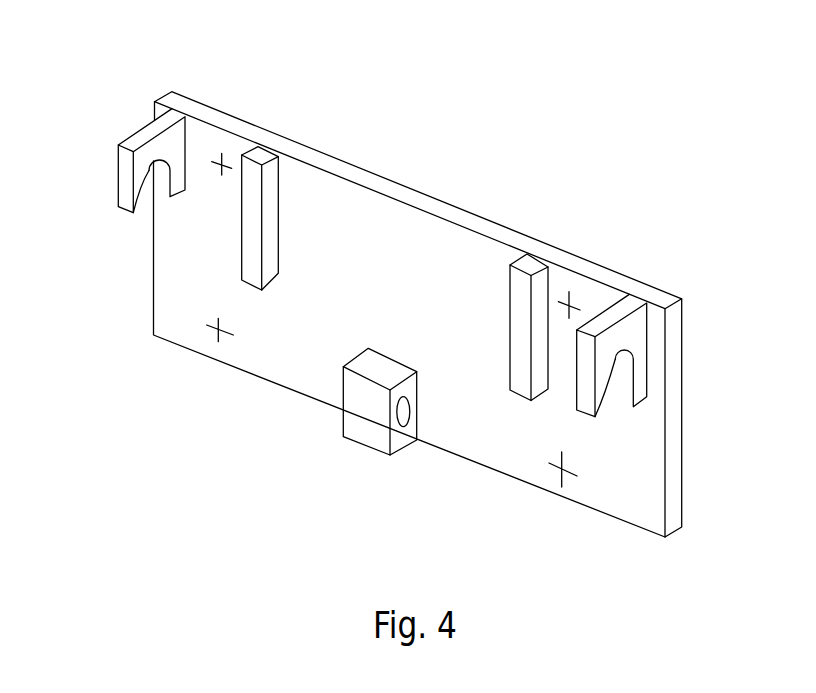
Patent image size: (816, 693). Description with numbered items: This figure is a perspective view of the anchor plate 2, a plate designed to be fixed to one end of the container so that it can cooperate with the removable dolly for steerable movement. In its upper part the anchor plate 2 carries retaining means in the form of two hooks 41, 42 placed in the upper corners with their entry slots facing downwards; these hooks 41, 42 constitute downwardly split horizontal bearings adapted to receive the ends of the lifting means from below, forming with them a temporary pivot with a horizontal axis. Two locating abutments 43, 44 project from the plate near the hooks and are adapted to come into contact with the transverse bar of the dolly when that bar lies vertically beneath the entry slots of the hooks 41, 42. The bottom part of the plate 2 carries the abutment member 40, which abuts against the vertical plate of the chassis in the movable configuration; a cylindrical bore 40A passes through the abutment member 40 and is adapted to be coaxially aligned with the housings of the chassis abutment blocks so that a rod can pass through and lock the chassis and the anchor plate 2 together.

The anchor plate 2 is at (167, 420).
The abutment member 40 is at (403, 453).
The cylindrical bore 40A is at (407, 420).
The hook 41 is at (130, 134).
The hook 42 is at (607, 411).
The locating abutment 43 is at (278, 190).
The locating abutment 44 is at (510, 280).